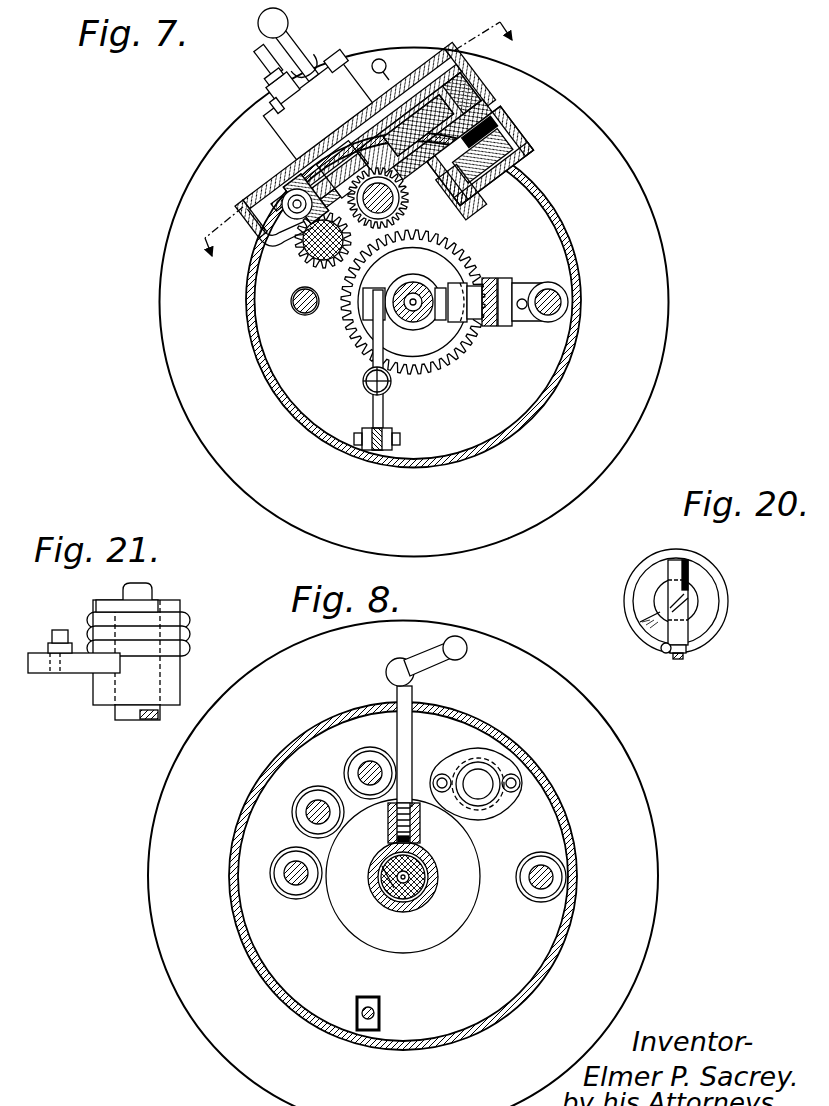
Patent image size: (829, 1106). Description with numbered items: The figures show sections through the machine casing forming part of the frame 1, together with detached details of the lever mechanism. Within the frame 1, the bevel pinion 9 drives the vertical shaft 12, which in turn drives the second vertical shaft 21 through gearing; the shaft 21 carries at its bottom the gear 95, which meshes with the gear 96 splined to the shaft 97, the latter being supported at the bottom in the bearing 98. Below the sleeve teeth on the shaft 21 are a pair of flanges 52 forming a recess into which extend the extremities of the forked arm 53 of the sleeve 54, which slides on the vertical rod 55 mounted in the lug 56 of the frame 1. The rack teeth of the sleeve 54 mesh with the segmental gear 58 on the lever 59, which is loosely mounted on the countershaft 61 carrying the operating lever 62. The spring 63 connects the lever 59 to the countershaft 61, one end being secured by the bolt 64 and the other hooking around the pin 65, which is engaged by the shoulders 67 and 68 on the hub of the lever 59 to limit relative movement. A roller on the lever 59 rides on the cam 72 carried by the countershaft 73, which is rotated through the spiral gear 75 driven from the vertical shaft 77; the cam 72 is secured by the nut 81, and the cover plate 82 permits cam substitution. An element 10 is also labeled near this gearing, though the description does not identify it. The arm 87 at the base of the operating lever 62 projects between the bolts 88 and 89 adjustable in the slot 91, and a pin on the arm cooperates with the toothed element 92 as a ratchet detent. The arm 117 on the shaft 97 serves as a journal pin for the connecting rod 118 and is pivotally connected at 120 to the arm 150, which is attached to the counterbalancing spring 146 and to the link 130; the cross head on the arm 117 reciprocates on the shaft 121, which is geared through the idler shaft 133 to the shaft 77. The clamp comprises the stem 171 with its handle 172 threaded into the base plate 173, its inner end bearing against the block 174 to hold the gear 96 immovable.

In FIG. 7, the frame 1 is at (437, 466).
In FIG. 8, the frame 1 is at (276, 990).
In FIG. 7, the bevel pinion 9 is at (363, 149).
In FIG. 7, the gear 10 is at (400, 204).
In FIG. 7, the vertical shaft 12 is at (305, 314).
In FIG. 8, the vertical shaft 12 is at (290, 886).
In FIG. 7, the second vertical shaft 21 is at (306, 256).
In FIG. 8, the second vertical shaft 21 is at (306, 812).
In FIG. 7, the flanges 52 is at (290, 301).
In FIG. 7, the forked arm 53 is at (300, 228).
In FIG. 7, the sleeve 54 is at (262, 200).
In FIG. 7, the vertical rod 55 is at (288, 196).
In FIG. 7, the lug 56 is at (265, 215).
In FIG. 7, the segmental gear 58 is at (306, 198).
In FIG. 7, the lever 59 is at (352, 150).
In FIG. 21, the lever 59 is at (80, 666).
In FIG. 21, the countershaft 61 is at (130, 722).
In FIG. 20, the countershaft 61 is at (690, 604).
In FIG. 7, the operating lever 62 is at (285, 16).
In FIG. 21, the spring 63 is at (192, 632).
In FIG. 20, the spring 63 is at (630, 606).
In FIG. 21, the bolt 64 is at (58, 628).
In FIG. 7, the pin 65 is at (395, 196).
In FIG. 21, the pin 65 is at (150, 592).
In FIG. 20, the pin 65 is at (672, 565).
In FIG. 20, the shoulder 67 is at (640, 626).
In FIG. 20, the shoulder 68 is at (698, 588).
In FIG. 7, the cam 72 is at (462, 64).
In FIG. 7, the countershaft 73 is at (478, 193).
In FIG. 7, the spiral gear 75 is at (516, 116).
In FIG. 7, the vertical shaft 77 is at (403, 212).
In FIG. 8, the vertical shaft 77 is at (358, 770).
In FIG. 7, the nut 81 is at (418, 72).
In FIG. 7, the cover plate 82 is at (435, 72).
In FIG. 7, the arm 87 is at (272, 98).
In FIG. 7, the bolt 88 is at (270, 90).
In FIG. 7, the bolt 89 is at (278, 82).
In FIG. 7, the slot 91 is at (262, 52).
In FIG. 7, the toothed element 92 is at (335, 62).
In FIG. 7, the gear 95 is at (352, 298).
In FIG. 7, the gear 96 is at (366, 332).
In FIG. 8, the gear 96 is at (438, 884).
In FIG. 7, the shaft 97 is at (403, 320).
In FIG. 8, the shaft 97 is at (394, 890).
In FIG. 8, the bearing 98 is at (373, 870).
In FIG. 7, the arm 117 is at (512, 278).
In FIG. 7, the connecting rod 118 is at (488, 324).
In FIG. 7, the pivot 120 is at (400, 287).
In FIG. 7, the shaft 121 is at (569, 302).
In FIG. 8, the shaft 121 is at (534, 890).
In FIG. 7, the link 130 is at (385, 432).
In FIG. 8, the link 130 is at (380, 1006).
In FIG. 8, the idler shaft 133 is at (482, 792).
In FIG. 7, the spring 146 is at (391, 383).
In FIG. 7, the arm 150 is at (374, 412).
In FIG. 8, the stem 171 is at (413, 740).
In FIG. 8, the handle 172 is at (436, 664).
In FIG. 8, the base plate 173 is at (403, 885).
In FIG. 8, the block 174 is at (418, 848).